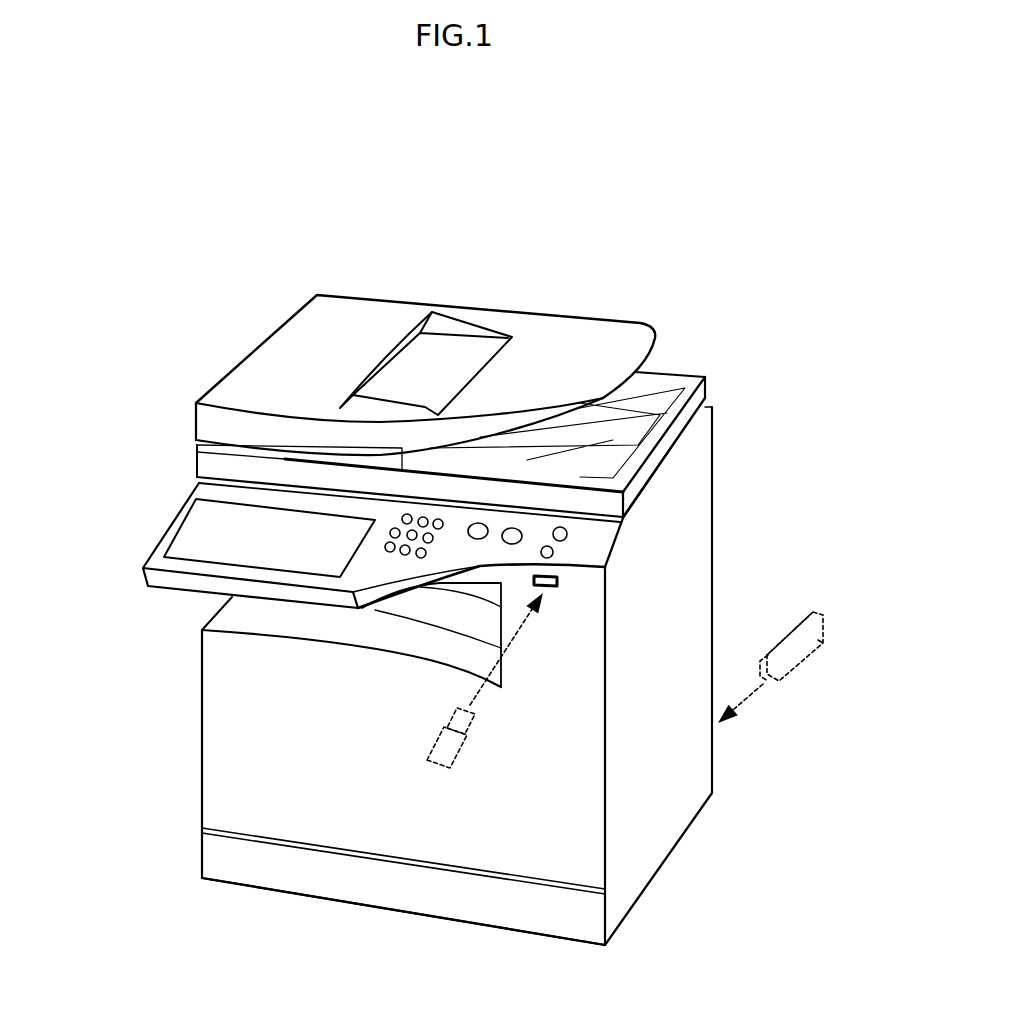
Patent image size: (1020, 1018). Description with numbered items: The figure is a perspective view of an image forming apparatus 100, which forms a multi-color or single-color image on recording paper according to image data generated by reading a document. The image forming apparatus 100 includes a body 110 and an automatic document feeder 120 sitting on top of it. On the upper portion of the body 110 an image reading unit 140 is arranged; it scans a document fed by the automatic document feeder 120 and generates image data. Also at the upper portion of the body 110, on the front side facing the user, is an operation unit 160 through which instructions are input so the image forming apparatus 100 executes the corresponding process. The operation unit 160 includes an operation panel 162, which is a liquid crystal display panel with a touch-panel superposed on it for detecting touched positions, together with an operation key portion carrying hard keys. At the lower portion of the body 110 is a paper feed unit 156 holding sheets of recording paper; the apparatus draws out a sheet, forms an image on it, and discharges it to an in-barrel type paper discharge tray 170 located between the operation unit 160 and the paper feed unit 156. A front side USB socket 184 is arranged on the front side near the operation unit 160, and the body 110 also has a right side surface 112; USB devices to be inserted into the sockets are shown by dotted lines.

The image forming apparatus 100 is at (790, 302).
The body 110 is at (762, 508).
The right side surface 112 is at (685, 742).
The automatic document feeder 120 is at (418, 308).
The image reading unit 140 is at (712, 448).
The paper feed unit 156 is at (217, 857).
The operation unit 160 is at (150, 503).
The operation panel 162 is at (200, 535).
The paper discharge tray 170 is at (265, 620).
The front side USB socket 184 is at (558, 580).